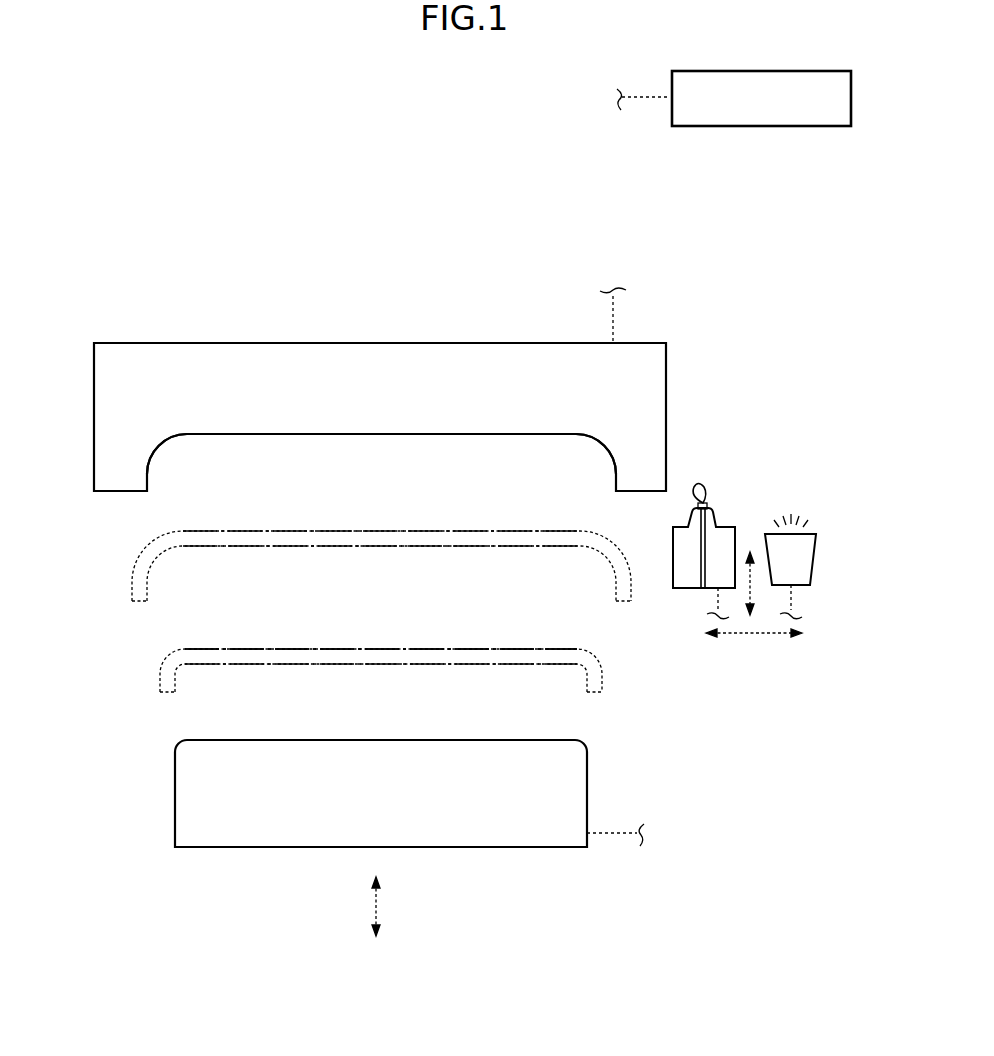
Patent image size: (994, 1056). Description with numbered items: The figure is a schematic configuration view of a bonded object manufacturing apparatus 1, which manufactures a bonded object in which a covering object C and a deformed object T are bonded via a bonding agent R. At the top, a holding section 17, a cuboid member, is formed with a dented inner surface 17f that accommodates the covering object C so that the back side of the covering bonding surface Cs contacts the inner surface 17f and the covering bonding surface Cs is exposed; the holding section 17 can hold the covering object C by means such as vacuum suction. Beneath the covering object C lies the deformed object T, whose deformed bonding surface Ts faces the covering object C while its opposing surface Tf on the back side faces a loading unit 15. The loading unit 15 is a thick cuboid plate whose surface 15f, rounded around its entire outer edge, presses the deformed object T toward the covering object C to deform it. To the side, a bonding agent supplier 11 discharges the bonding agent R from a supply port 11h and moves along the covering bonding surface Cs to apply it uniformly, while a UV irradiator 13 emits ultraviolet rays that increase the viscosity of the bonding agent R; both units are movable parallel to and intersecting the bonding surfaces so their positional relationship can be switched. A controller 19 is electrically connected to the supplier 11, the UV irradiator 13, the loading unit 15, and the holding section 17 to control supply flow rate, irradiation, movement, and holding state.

The bonded object manufacturing apparatus 1 is at (80, 111).
The controller 19 is at (793, 126).
The holding section 17 is at (147, 343).
The inner surface 17f is at (300, 437).
The covering object C is at (134, 582).
The covering bonding surface Cs is at (306, 545).
The deformed object T is at (160, 676).
The deformed bonding surface Ts is at (283, 647).
The opposing surface Tf is at (348, 665).
The loading unit 15 is at (588, 797).
The surface 15f is at (497, 737).
The bonding agent supplier 11 is at (686, 591).
The supply port 11h is at (706, 503).
The bonding agent R is at (702, 488).
The UV irradiator 13 is at (815, 556).